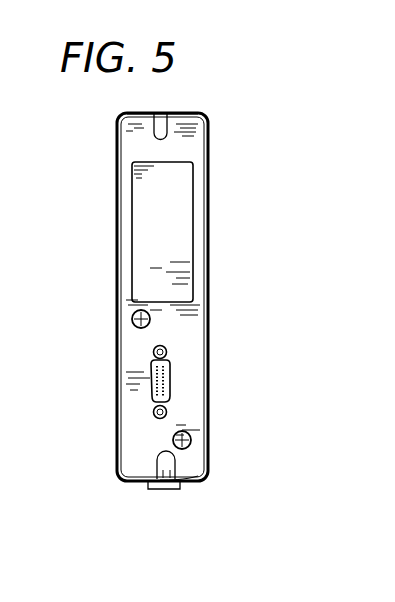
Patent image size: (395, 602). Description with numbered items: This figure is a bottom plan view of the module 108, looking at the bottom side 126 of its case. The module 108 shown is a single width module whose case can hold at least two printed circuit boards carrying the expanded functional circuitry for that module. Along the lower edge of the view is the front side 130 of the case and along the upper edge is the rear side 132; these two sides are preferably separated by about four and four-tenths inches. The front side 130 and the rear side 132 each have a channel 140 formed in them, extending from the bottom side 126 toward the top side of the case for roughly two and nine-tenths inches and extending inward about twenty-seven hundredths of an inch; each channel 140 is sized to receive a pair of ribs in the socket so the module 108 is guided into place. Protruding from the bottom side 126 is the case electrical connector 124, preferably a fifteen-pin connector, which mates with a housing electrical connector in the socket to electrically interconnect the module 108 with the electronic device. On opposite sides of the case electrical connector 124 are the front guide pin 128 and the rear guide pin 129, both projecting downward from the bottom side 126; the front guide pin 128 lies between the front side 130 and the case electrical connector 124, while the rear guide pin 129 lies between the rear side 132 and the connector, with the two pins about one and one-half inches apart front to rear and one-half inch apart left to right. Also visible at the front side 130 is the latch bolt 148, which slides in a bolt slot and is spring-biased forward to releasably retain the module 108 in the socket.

The module 108 is at (273, 168).
The case electrical connector 124 is at (172, 374).
The bottom side 126 is at (205, 310).
The front guide pin 128 is at (192, 440).
The rear guide pin 129 is at (132, 318).
The front side 130 is at (188, 482).
The rear side 132 is at (196, 115).
The channel 140 is at (158, 113).
The latch bolt 148 is at (170, 490).